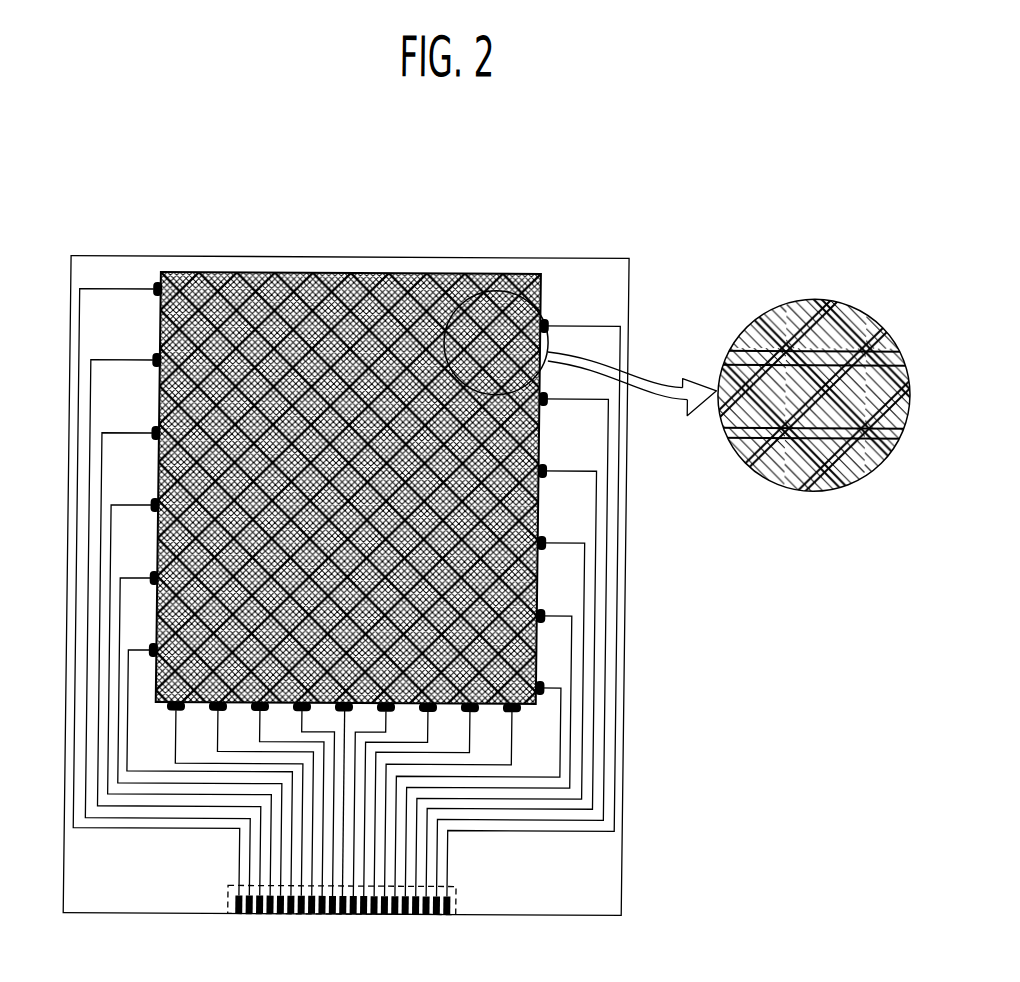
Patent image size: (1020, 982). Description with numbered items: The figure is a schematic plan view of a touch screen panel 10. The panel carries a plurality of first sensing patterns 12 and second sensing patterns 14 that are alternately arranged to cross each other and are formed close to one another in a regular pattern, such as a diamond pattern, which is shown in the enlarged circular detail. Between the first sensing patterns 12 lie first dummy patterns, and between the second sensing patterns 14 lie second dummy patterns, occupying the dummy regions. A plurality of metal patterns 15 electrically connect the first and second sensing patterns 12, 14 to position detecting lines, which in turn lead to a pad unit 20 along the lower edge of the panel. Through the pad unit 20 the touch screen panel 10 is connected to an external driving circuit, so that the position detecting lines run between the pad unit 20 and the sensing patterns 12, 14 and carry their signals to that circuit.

The touch screen panel 10 is at (438, 247).
The first sensing patterns 12 is at (786, 296).
The second sensing patterns 14 is at (719, 331).
The metal patterns 15 is at (531, 289).
The pad unit 20 is at (452, 890).